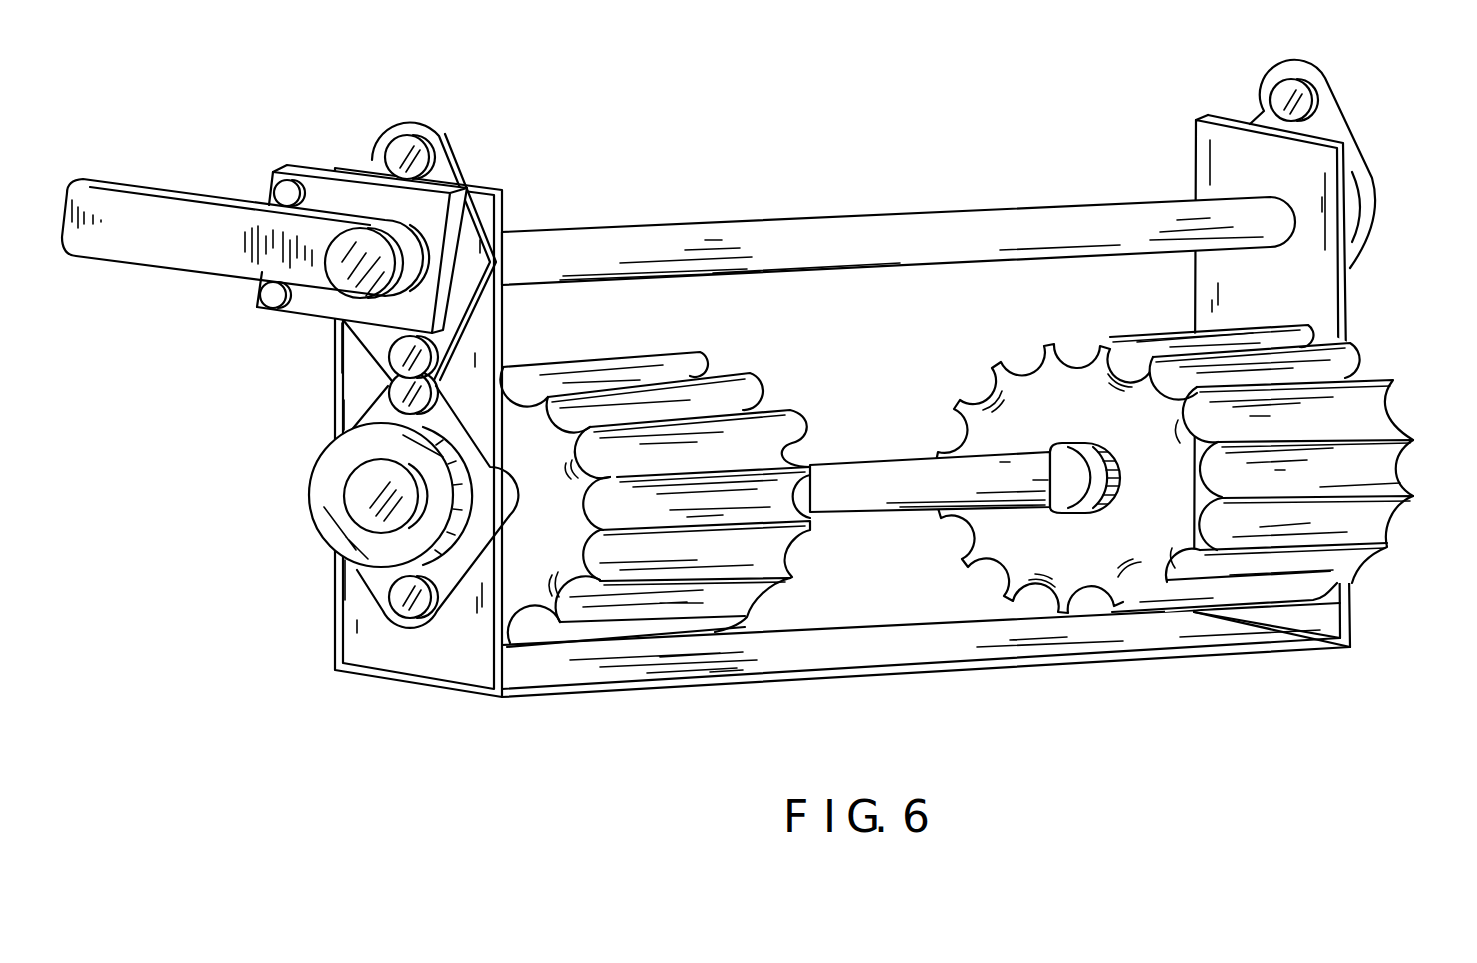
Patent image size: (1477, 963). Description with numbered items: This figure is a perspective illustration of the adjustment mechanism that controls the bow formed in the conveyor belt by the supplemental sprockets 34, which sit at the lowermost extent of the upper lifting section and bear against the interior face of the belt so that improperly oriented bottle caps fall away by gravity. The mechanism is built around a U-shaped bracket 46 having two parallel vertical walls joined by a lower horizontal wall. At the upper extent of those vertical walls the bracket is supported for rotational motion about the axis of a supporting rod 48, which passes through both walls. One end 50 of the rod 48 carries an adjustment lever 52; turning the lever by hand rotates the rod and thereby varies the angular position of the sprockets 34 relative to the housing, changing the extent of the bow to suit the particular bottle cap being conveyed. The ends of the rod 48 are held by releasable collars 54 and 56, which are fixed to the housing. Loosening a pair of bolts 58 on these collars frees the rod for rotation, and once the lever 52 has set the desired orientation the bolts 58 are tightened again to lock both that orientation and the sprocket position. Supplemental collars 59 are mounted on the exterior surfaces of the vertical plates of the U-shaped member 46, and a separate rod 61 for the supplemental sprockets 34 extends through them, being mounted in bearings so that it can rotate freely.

The supplemental sprockets 34 is at (750, 592).
The U-shaped bracket 46 is at (425, 669).
The supporting rod 48 is at (692, 237).
The end 50 is at (340, 282).
The adjustment lever 52 is at (90, 203).
The releasable collar 54 is at (417, 121).
The releasable collar 56 is at (1308, 68).
The bolts 58 is at (423, 164).
The supplemental collars 59 is at (370, 573).
The rod 61 is at (927, 500).